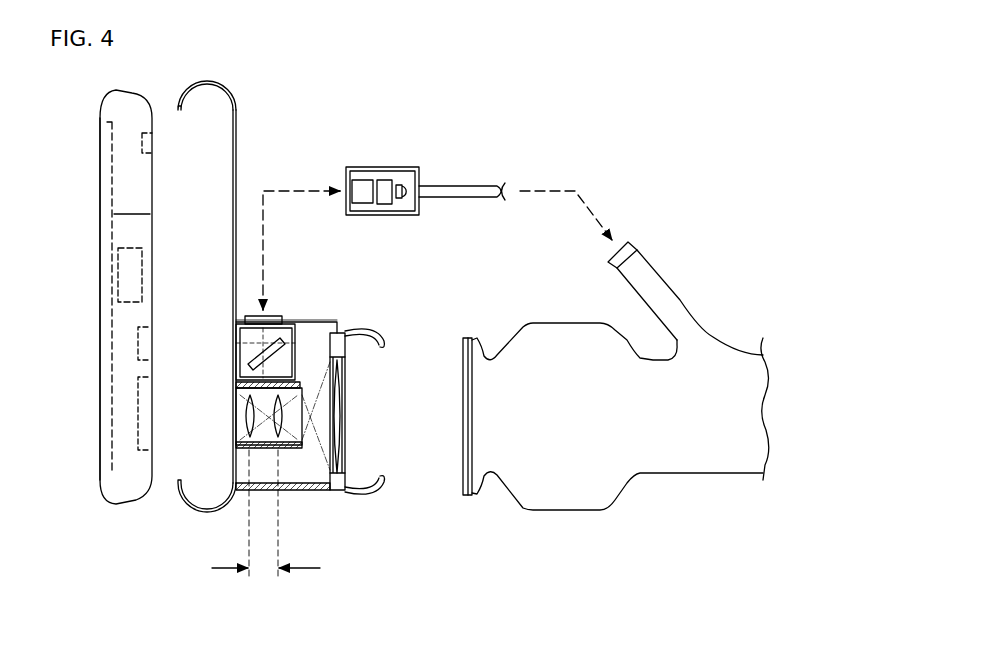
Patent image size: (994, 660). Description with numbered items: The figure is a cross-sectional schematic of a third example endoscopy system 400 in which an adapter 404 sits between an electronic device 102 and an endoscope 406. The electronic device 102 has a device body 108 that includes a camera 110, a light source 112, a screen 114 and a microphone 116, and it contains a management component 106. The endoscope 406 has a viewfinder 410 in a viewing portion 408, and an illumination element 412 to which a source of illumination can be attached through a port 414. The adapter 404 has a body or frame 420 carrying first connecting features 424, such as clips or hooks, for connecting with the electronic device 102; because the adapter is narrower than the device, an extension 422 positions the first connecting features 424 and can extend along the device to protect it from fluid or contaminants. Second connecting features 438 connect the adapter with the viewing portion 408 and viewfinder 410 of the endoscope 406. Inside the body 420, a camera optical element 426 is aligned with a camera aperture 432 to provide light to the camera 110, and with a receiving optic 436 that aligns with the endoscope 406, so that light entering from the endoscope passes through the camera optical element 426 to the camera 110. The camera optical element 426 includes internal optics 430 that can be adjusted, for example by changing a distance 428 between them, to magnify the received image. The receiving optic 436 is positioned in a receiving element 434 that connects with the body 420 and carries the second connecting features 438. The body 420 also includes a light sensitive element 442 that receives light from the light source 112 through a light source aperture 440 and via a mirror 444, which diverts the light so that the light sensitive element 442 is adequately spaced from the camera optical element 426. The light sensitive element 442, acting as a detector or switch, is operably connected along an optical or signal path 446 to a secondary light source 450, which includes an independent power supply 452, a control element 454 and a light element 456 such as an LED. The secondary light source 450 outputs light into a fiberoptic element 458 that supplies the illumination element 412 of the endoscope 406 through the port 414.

The endoscopy system 400 is at (603, 90).
The electronic device 102 is at (90, 498).
The management component 106 is at (118, 280).
The device body 108 is at (135, 203).
The camera 110 is at (138, 387).
The light source 112 is at (138, 333).
The screen 114 is at (100, 250).
The microphone 116 is at (142, 148).
The adapter 404 is at (307, 451).
The endoscope 406 is at (612, 520).
The viewing portion 408 is at (470, 496).
The viewfinder 410 is at (420, 414).
The illumination element 412 is at (682, 300).
The port 414 is at (666, 202).
The body 420 is at (295, 491).
The extension 422 is at (238, 118).
The first connecting features 424 is at (212, 84).
The camera optical element 426 is at (290, 449).
The distance 428 is at (265, 572).
The internal optics 430 is at (277, 438).
The camera aperture 432 is at (236, 412).
The receiving element 434 is at (345, 492).
The receiving optic 436 is at (340, 412).
The second connecting features 438 is at (384, 338).
The light source aperture 440 is at (236, 347).
The light sensitive element 442 is at (246, 323).
The mirror 444 is at (284, 353).
The optical path 446 is at (266, 252).
The secondary light source 450 is at (403, 154).
The independent power supply 452 is at (361, 180).
The control element 454 is at (383, 180).
The light element 456 is at (400, 184).
The fiberoptic element 458 is at (466, 188).